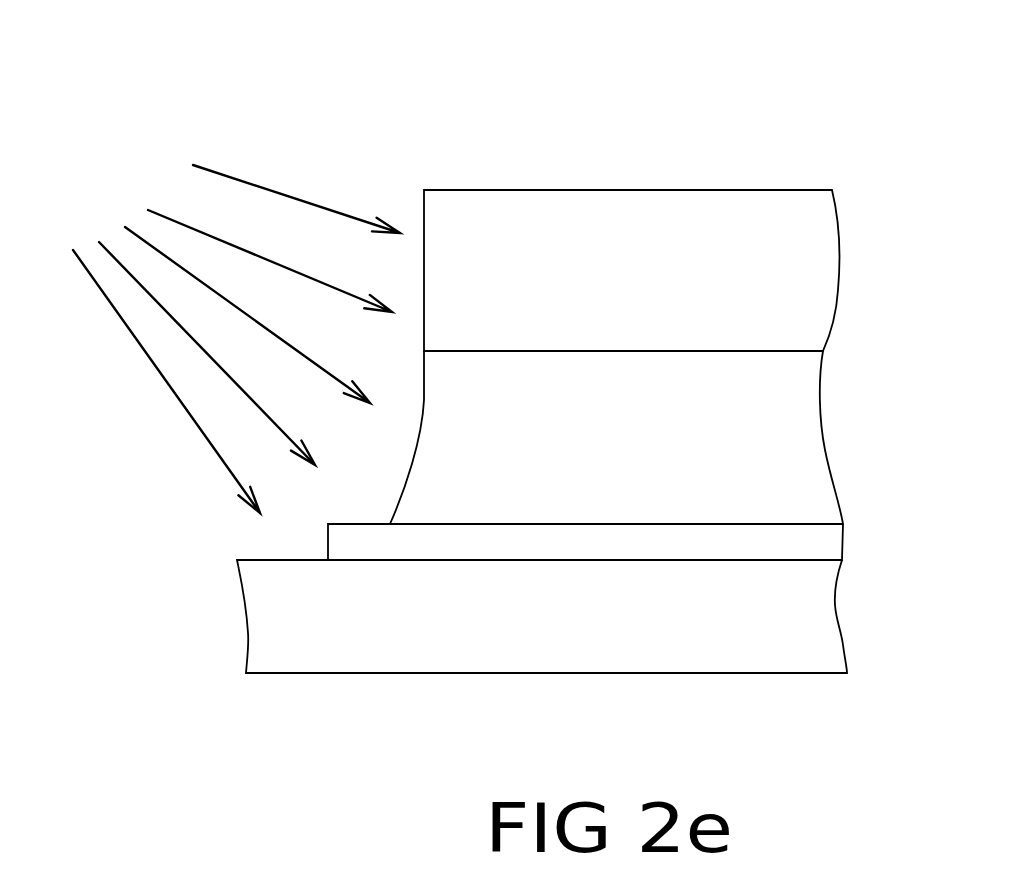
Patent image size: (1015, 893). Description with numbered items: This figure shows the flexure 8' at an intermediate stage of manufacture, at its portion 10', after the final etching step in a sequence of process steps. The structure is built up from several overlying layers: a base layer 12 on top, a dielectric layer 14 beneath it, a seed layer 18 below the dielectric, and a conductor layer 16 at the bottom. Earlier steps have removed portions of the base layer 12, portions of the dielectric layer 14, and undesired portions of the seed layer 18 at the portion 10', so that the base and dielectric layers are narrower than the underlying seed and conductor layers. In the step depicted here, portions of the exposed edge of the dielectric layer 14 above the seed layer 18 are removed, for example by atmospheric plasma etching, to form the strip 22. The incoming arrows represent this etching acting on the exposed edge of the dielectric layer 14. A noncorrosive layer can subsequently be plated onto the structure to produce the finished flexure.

The flexure 8' is at (943, 104).
The portion 10' is at (605, 372).
The base layer 12 is at (832, 325).
The dielectric layer 14 is at (825, 448).
The conductor layer 16 is at (842, 635).
The seed layer 18 is at (843, 548).
The strip 22 is at (368, 525).